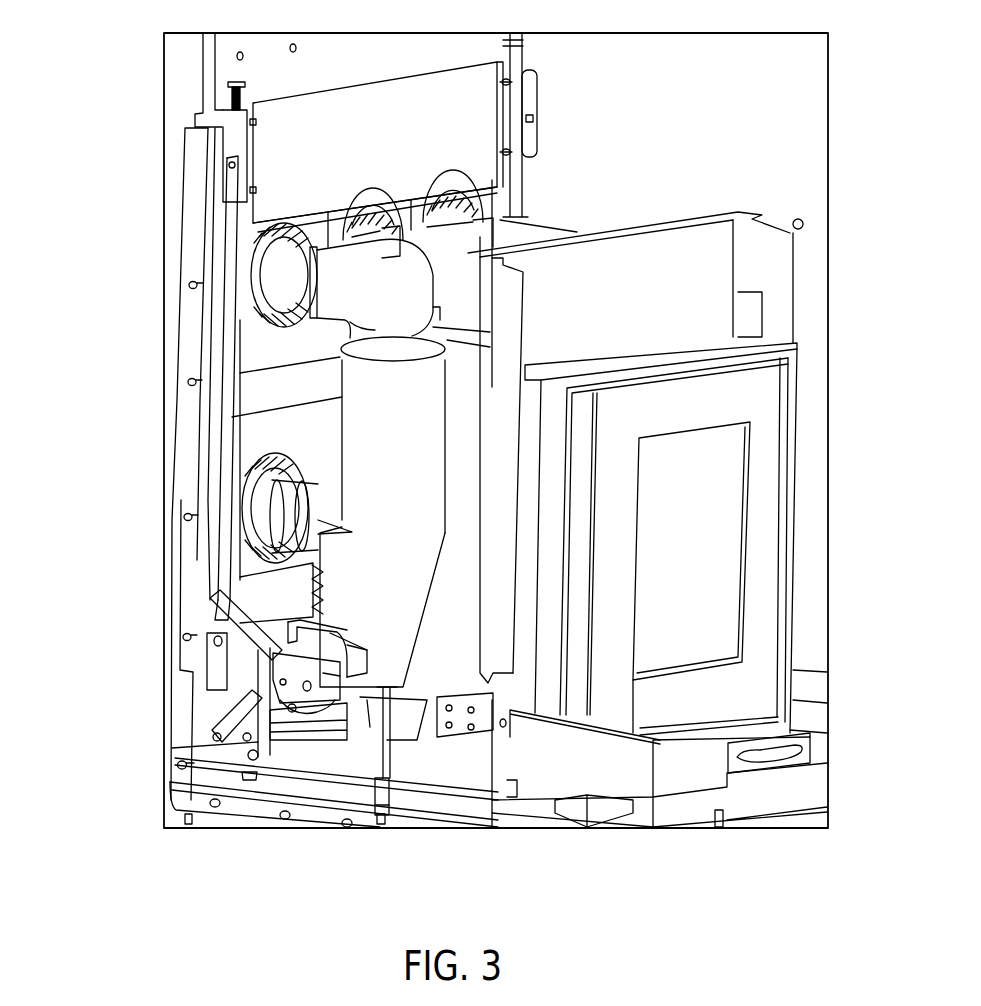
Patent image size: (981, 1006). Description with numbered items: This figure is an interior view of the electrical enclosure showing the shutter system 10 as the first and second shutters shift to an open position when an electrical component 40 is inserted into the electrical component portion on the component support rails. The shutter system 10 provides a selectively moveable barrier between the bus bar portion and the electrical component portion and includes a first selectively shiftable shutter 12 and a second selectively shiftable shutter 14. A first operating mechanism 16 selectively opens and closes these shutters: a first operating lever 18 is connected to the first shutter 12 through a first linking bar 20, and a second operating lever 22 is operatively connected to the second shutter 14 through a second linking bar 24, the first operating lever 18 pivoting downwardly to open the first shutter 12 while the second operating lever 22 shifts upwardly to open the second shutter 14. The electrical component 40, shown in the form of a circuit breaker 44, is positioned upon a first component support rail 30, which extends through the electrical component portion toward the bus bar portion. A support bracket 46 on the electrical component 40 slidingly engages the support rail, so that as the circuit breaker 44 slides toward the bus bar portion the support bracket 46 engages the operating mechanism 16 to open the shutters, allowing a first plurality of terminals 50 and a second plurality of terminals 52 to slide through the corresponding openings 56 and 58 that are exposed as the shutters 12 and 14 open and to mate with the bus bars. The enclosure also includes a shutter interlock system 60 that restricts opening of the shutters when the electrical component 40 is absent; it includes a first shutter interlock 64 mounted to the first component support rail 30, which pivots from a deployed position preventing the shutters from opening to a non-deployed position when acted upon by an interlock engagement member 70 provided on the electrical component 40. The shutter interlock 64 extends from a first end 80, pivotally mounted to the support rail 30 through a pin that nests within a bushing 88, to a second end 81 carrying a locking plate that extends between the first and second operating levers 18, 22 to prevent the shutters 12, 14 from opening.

The shutter system 10 is at (120, 617).
The first selectively shiftable shutter 12 is at (281, 609).
The second selectively shiftable shutter 14 is at (298, 136).
The first operating mechanism 16 is at (357, 677).
The first operating lever 18 is at (233, 722).
The first linking bar 20 is at (221, 672).
The second operating lever 22 is at (233, 615).
The second linking bar 24 is at (222, 420).
The first component support rail 30 is at (471, 822).
The electrical component 40 is at (806, 608).
The circuit breaker 44 is at (757, 410).
The support bracket 46 is at (452, 778).
The first plurality of terminals 50 is at (291, 448).
The second plurality of terminals 52 is at (279, 340).
The opening 56 is at (243, 552).
The opening 58 is at (258, 356).
The shutter interlock system 60 is at (298, 788).
The first shutter interlock 64 is at (347, 776).
The interlock engagement member 70 is at (350, 640).
The first end 80 is at (374, 752).
The second end 81 is at (253, 748).
The bushing 88 is at (396, 806).